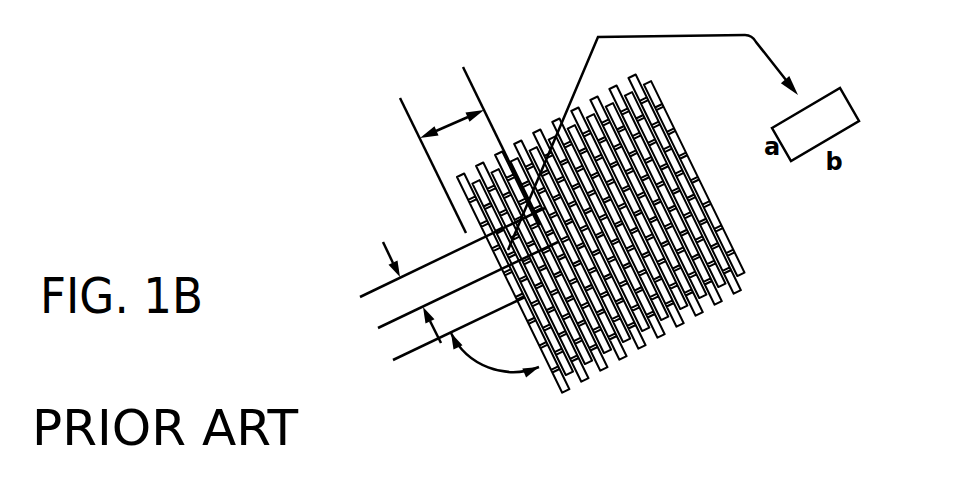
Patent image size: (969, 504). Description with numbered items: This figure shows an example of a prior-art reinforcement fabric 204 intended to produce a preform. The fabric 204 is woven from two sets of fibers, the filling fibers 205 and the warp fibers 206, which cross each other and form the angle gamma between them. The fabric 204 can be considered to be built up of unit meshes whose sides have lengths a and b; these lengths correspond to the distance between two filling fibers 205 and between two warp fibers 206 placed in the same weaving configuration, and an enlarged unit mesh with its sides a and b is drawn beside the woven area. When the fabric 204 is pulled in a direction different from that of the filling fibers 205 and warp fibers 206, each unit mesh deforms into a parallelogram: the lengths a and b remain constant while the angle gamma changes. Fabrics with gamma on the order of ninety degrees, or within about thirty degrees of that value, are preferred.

The fabric 204 is at (756, 231).
The filling fibers 205 is at (432, 189).
The warp fibers 206 is at (455, 226).